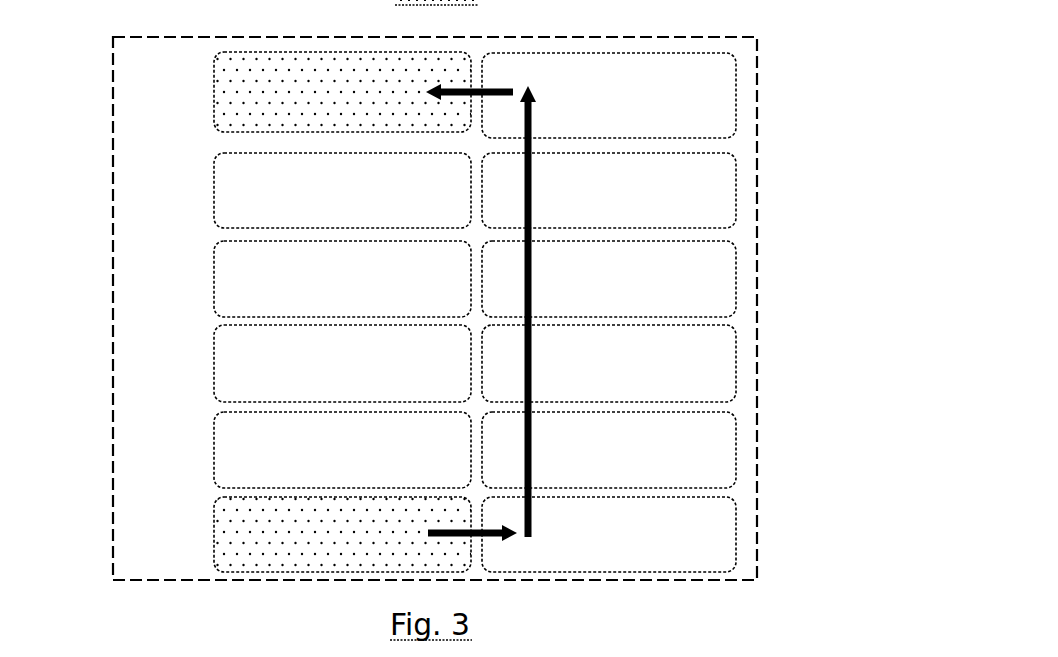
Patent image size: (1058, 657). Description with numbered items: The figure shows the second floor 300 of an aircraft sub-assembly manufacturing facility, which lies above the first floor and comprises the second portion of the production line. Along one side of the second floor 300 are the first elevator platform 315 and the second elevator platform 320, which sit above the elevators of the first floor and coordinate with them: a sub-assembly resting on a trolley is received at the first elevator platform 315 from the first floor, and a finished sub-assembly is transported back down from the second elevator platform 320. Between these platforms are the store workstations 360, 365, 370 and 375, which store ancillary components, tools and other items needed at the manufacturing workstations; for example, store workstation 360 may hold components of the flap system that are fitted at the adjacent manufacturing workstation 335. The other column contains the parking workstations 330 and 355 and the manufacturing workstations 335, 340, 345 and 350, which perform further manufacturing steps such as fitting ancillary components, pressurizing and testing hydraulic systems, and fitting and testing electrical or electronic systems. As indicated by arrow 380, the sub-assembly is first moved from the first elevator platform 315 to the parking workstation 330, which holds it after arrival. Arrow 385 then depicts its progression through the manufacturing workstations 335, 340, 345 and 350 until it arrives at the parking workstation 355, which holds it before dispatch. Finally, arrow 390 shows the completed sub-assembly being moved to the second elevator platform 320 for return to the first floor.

The second floor 300 is at (110, 343).
The first elevator platform 315 is at (363, 548).
The second elevator platform 320 is at (363, 106).
The parking workstation 330 is at (629, 548).
The manufacturing workstation 335 is at (629, 464).
The manufacturing workstation 340 is at (629, 378).
The manufacturing workstation 345 is at (629, 293).
The manufacturing workstation 350 is at (629, 204).
The parking workstation 355 is at (629, 111).
The store workstation 360 is at (363, 464).
The store workstation 365 is at (363, 378).
The store workstation 370 is at (363, 293).
The store workstation 375 is at (363, 204).
The arrow 380 is at (488, 535).
The arrow 385 is at (532, 338).
The arrow 390 is at (488, 92).